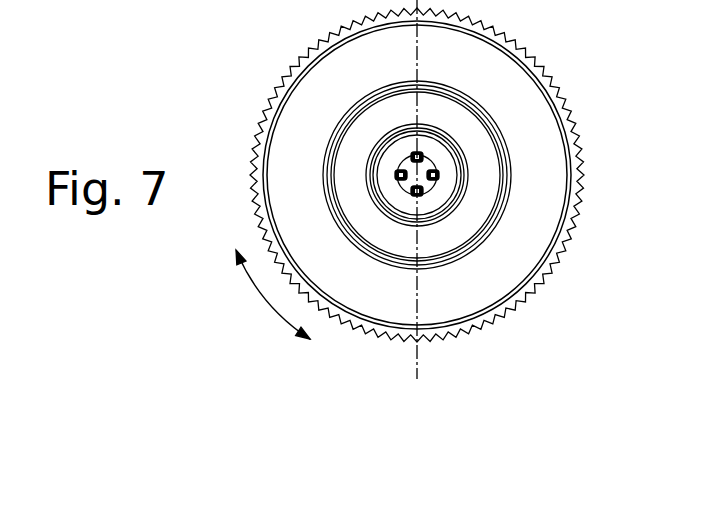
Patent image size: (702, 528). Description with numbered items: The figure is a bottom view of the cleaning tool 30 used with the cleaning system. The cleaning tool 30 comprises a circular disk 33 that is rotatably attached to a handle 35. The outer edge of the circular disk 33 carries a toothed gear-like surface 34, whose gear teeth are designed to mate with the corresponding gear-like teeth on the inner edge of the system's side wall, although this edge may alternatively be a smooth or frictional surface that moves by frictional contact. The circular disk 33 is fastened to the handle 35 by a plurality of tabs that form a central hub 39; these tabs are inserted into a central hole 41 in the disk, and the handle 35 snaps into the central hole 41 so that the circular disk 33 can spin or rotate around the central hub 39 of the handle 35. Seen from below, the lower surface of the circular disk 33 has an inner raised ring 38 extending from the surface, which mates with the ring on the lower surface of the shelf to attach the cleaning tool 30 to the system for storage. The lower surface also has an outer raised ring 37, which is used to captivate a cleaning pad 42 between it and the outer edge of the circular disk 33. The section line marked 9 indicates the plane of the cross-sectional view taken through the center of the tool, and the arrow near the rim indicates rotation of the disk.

The cleaning tool 30 is at (201, 52).
The circular disk 33 is at (565, 143).
The toothed gear-like surface 34 is at (525, 52).
The handle 35 is at (435, 165).
The outer raised ring 37 is at (500, 225).
The inner raised ring 38 is at (435, 177).
The central hub 39 is at (430, 185).
The central hole 41 is at (405, 160).
The cleaning pad 42 is at (540, 120).
The section line 9- 9 is at (417, 379).